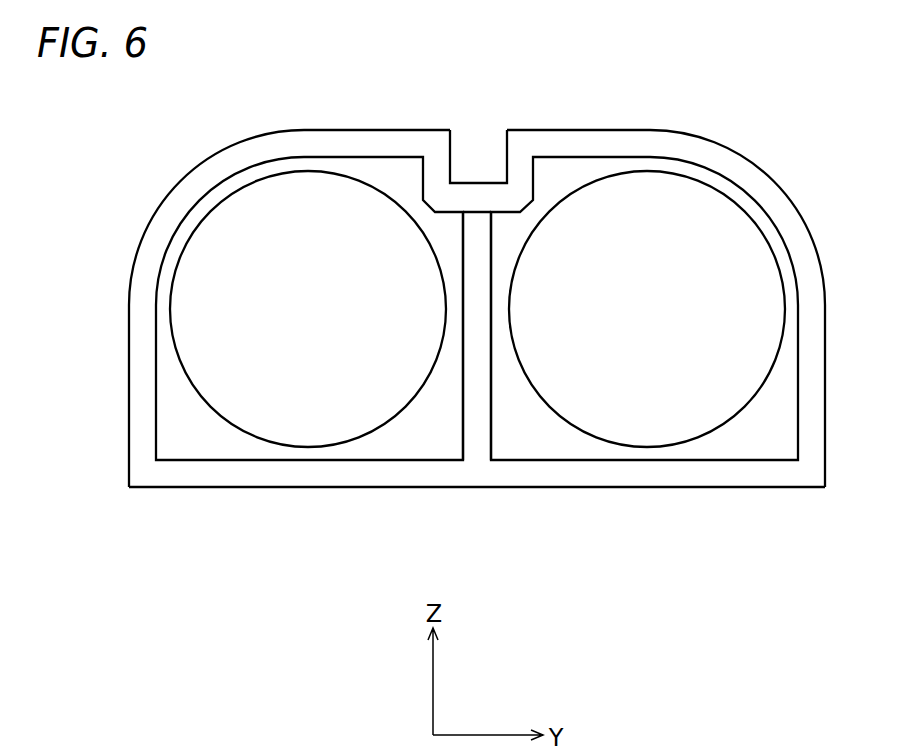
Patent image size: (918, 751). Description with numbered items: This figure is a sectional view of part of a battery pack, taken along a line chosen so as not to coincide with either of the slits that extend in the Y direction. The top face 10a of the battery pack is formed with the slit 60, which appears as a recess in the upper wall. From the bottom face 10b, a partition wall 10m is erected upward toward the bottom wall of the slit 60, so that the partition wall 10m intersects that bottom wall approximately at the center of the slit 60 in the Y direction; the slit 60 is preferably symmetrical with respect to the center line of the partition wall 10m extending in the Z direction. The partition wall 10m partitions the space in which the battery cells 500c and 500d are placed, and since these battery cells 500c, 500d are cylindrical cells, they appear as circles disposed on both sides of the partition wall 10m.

The top face 10a is at (582, 147).
The bottom face 10b is at (540, 472).
The partition wall 10m is at (478, 435).
The slit 60 is at (480, 152).
The battery cell 500c is at (240, 430).
The battery cell 500d is at (670, 447).